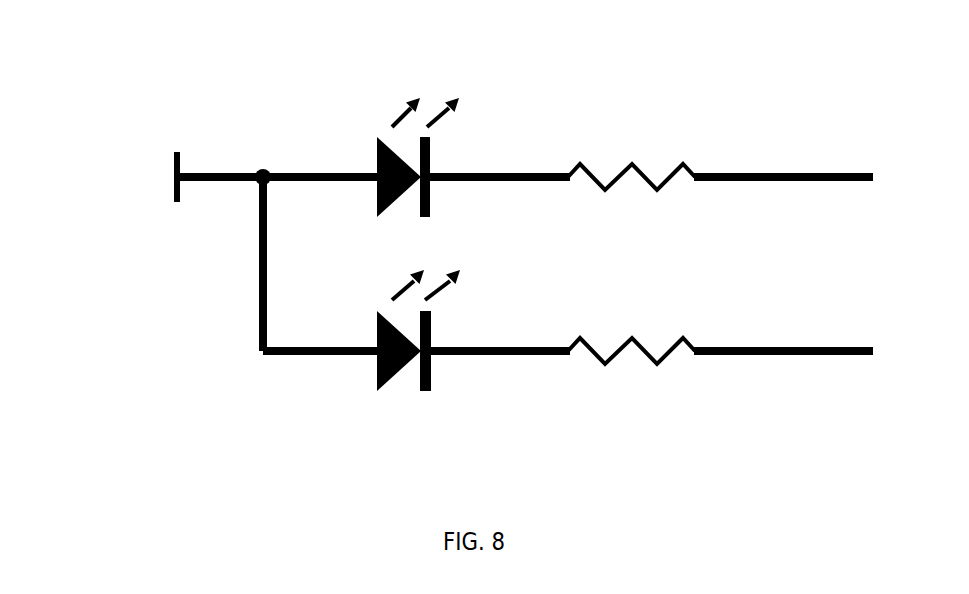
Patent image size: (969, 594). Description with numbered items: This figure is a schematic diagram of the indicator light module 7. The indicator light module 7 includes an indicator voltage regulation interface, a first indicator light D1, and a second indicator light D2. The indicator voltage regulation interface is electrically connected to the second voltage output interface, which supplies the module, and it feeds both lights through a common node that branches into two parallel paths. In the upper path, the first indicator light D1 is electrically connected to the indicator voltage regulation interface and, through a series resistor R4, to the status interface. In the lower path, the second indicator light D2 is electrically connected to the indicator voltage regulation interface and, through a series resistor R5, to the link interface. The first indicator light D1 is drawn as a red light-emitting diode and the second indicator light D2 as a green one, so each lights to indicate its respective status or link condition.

The indicator light module 7 is at (266, 88).
The first indicator light D1 is at (402, 117).
The second indicator light D2 is at (402, 373).
The 1K resistor for D1 R4 is at (631, 178).
The 1K resistor for D2 R5 is at (631, 351).